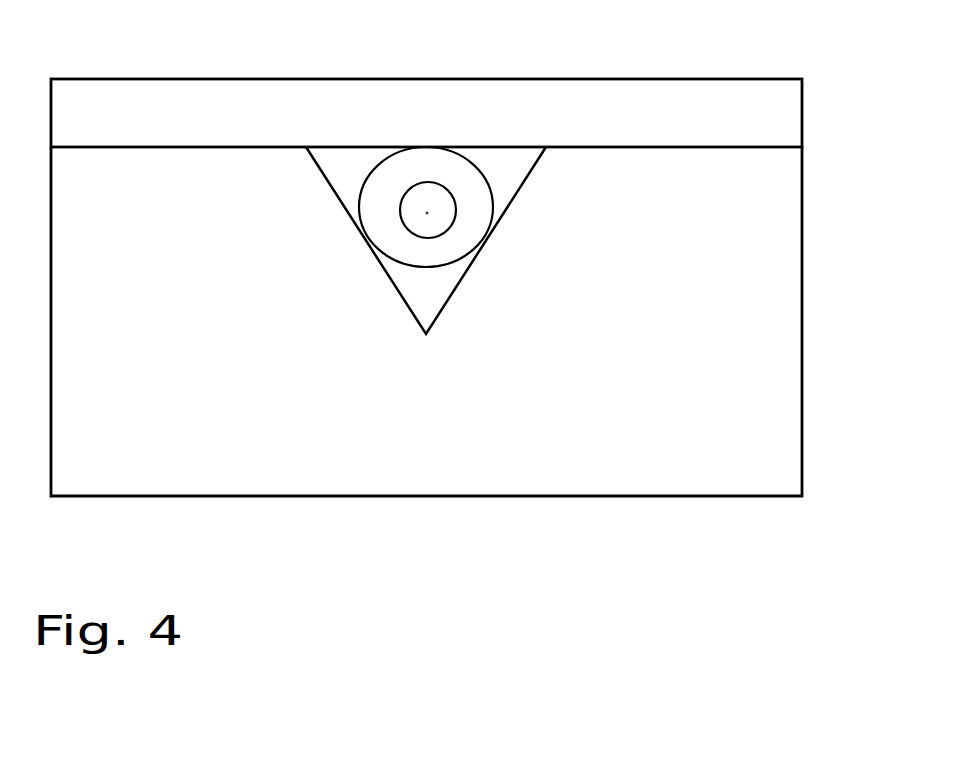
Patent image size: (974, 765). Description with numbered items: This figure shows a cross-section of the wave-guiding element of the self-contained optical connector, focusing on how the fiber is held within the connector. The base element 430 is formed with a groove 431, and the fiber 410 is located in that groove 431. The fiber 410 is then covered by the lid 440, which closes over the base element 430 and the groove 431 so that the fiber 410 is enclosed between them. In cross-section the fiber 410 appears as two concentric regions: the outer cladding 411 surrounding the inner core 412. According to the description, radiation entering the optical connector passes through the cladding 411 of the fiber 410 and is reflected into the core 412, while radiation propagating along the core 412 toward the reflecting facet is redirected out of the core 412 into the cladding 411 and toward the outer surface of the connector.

The lid 440 is at (774, 121).
The base element 430 is at (747, 402).
The groove 431 is at (456, 295).
The fiber 410 is at (462, 257).
The cladding 411 is at (480, 201).
The core 412 is at (426, 214).